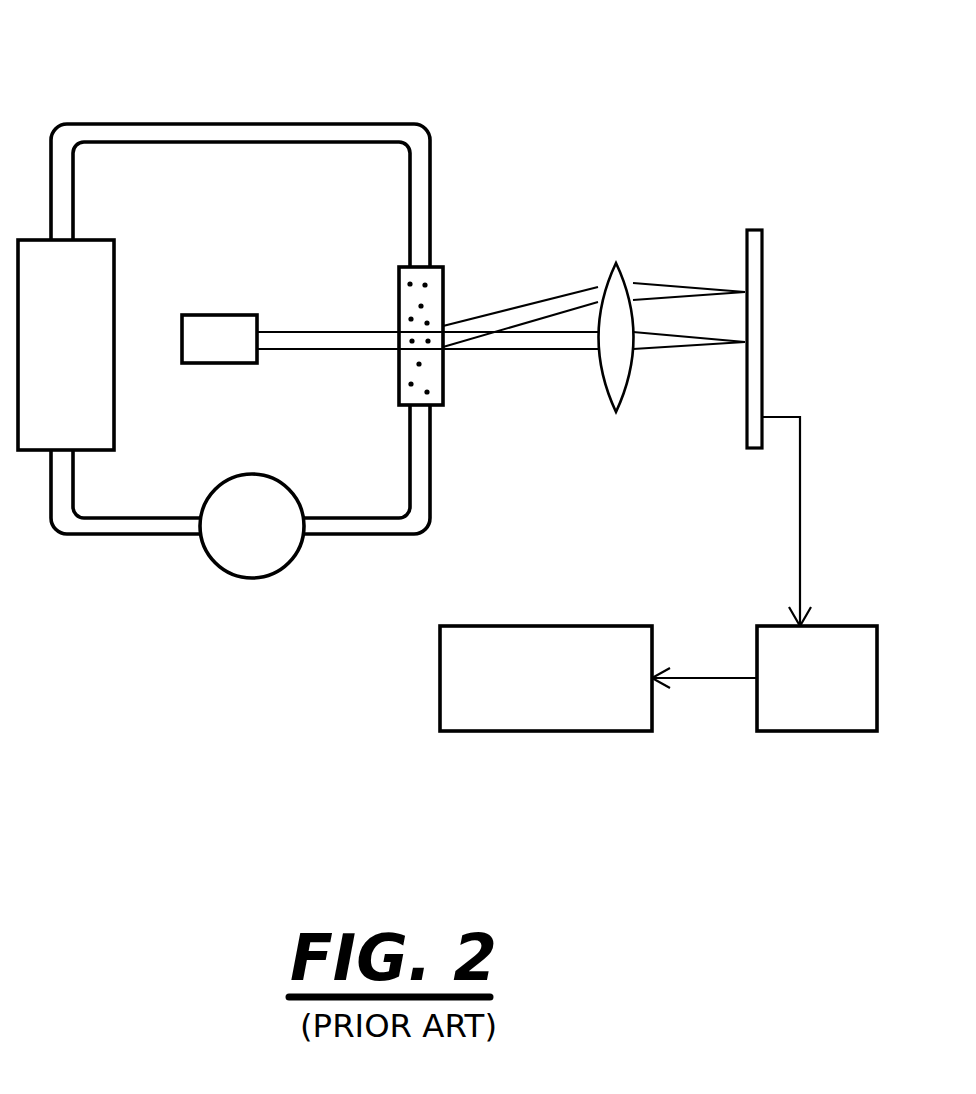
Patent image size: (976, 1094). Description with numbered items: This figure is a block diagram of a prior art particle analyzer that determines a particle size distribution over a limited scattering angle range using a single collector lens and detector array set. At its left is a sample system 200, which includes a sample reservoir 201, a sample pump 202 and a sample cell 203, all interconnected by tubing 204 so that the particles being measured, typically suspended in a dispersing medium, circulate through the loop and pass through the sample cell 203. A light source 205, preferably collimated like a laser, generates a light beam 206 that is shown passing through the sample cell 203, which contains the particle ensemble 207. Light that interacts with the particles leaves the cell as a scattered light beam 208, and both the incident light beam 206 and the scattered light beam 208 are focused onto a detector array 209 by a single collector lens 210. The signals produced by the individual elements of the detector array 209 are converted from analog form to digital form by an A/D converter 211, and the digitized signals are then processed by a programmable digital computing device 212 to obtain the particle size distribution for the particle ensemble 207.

The sample system 200 is at (180, 124).
The sample reservoir 201 is at (114, 258).
The sample pump 202 is at (226, 573).
The sample cell 203 is at (445, 383).
The tubing 204 is at (353, 122).
The light source 205 is at (210, 365).
The light beam 206 is at (310, 332).
The particle ensemble 207 is at (421, 307).
The scattered light beam 208 is at (566, 296).
The detector array 209 is at (763, 248).
The collector lens 210 is at (613, 272).
The A/D converter 211 is at (777, 731).
The programmable digital computing device 212 is at (478, 731).